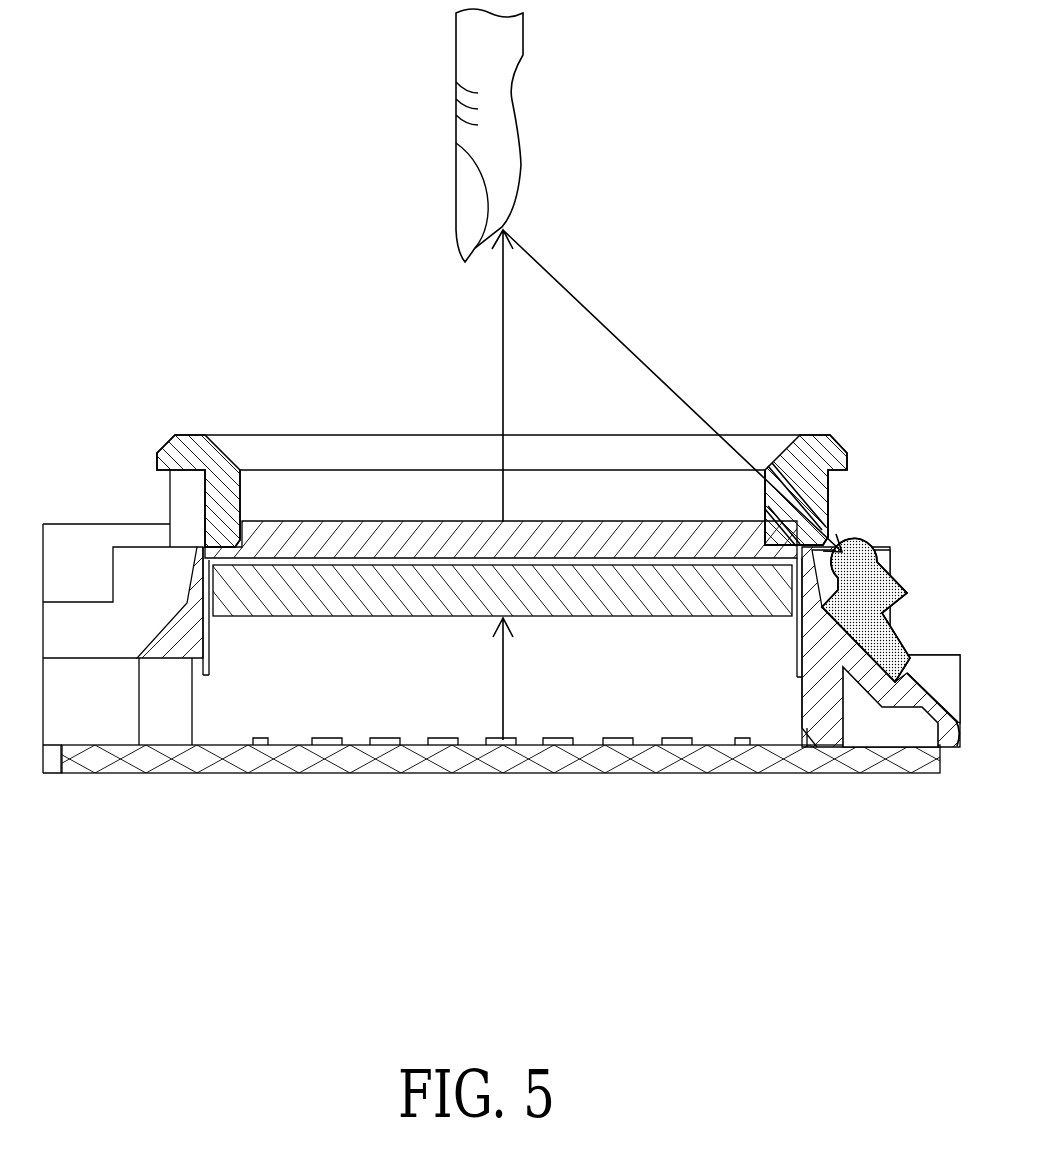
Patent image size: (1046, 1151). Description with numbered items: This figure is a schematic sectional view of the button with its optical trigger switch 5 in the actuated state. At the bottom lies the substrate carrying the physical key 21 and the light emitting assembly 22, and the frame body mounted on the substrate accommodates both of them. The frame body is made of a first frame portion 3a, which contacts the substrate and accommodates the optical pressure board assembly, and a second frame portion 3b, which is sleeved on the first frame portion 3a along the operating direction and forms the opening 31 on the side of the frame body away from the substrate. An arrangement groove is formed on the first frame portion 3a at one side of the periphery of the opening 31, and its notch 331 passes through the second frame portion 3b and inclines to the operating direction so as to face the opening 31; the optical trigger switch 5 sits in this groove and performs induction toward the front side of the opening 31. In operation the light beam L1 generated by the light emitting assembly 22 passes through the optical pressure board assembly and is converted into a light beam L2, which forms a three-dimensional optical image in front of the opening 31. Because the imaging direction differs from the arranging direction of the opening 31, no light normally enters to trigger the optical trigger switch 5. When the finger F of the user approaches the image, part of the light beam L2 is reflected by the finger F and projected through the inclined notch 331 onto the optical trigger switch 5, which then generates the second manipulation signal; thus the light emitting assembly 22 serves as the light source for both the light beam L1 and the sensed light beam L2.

The finger F is at (468, 58).
The opening 31 is at (422, 414).
The light beam L2 is at (506, 378).
The notch 331 is at (772, 462).
The second frame portion 3b is at (835, 455).
The optical trigger switch 5 is at (892, 590).
The first frame portion 3a is at (916, 690).
The light beam L1 is at (506, 682).
The light emitting assembly 22 is at (552, 748).
The physical key 21 is at (640, 770).